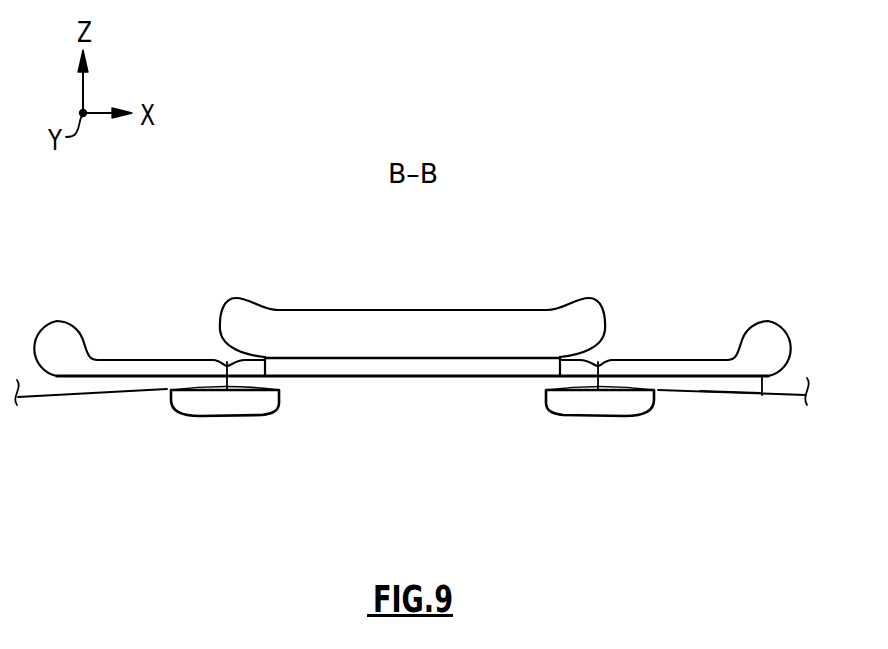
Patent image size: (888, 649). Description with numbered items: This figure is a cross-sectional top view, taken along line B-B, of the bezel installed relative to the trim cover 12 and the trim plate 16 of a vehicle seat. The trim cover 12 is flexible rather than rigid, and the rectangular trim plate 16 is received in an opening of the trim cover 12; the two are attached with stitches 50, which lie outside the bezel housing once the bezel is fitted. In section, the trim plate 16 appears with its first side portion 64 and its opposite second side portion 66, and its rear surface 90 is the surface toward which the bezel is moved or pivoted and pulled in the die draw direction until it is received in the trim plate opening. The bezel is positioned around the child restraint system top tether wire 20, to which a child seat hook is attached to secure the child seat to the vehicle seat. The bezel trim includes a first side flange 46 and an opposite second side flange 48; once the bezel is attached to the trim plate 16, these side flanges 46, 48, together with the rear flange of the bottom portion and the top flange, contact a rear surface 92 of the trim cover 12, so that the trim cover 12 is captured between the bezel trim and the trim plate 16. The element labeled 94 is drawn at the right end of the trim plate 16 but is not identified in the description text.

The substrate 12 is at (153, 393).
The film 16 is at (110, 366).
The dome 20 is at (468, 323).
The pad 46 is at (577, 412).
The pad 48 is at (248, 413).
The pin 50 is at (224, 361).
The top surface 64 is at (630, 360).
The top surface 66 is at (173, 358).
The edge 90 is at (762, 395).
The surface 92 is at (730, 395).
The surface 94 is at (673, 360).